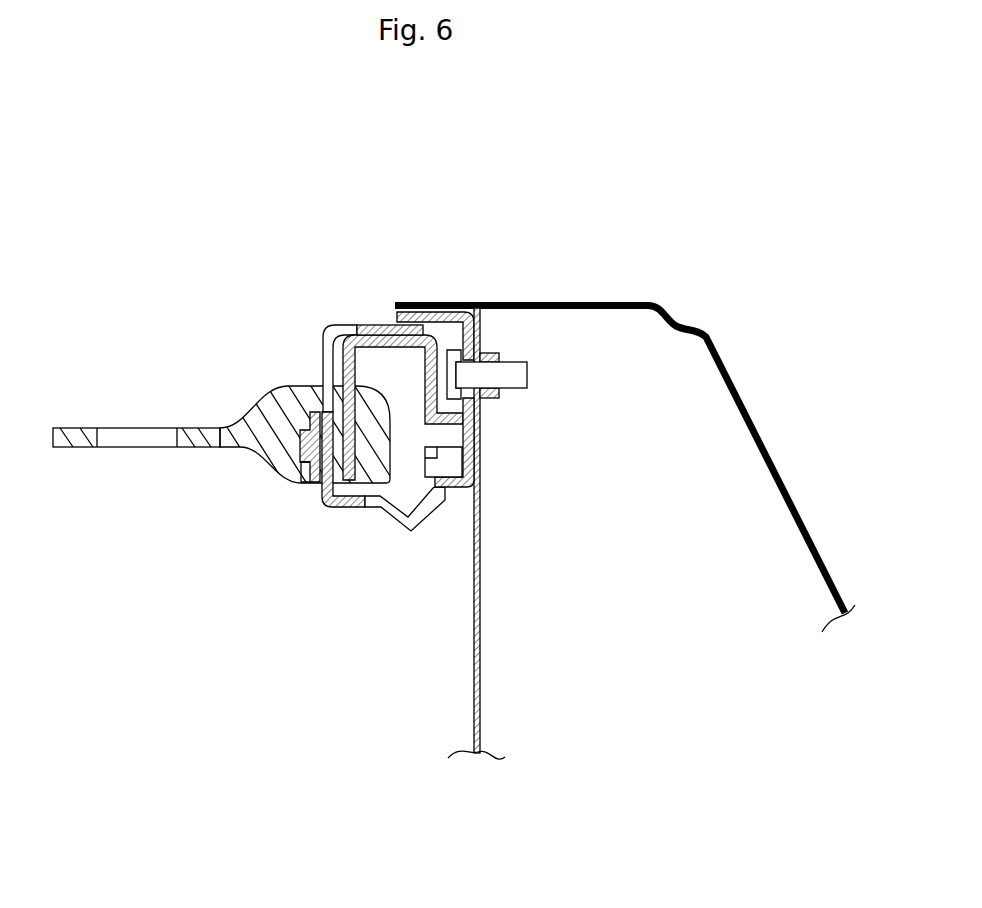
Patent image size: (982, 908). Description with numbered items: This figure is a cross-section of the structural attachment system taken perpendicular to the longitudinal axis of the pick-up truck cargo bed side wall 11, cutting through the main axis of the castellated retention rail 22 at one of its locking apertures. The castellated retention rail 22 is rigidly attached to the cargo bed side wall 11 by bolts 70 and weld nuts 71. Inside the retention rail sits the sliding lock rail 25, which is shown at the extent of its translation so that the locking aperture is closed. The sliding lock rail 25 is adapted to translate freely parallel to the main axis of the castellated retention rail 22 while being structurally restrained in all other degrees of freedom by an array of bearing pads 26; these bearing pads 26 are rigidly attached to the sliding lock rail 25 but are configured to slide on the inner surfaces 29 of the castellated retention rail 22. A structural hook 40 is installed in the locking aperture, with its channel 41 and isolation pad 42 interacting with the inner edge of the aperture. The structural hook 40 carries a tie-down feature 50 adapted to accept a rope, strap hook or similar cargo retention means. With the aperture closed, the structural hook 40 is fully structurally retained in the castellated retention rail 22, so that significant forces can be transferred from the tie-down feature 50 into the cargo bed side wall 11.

The cargo bed side wall 11 is at (776, 478).
The castellated retention rail 22 is at (332, 505).
The sliding lock rail 25 is at (377, 330).
The bearing pads 26 is at (442, 465).
The inner surfaces 29 is at (323, 487).
The structural hook 40 is at (243, 450).
The channel 41 is at (322, 410).
The isolation pad 42 is at (300, 480).
The tie-down feature 50 is at (100, 428).
The bolts 70 is at (512, 367).
The weld nuts 71 is at (492, 397).